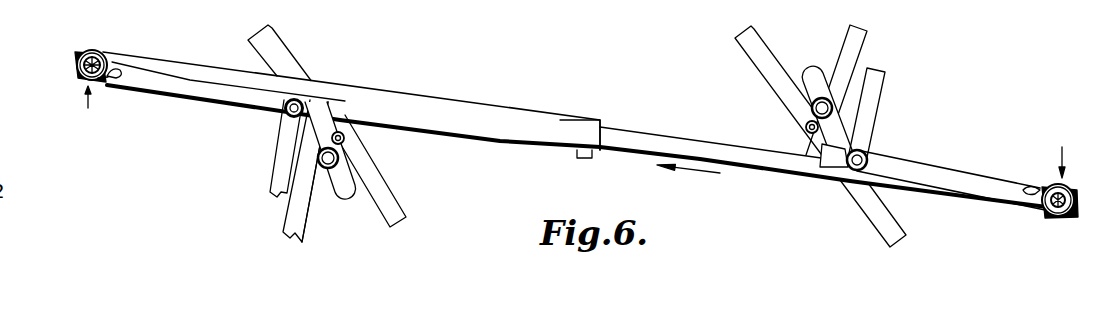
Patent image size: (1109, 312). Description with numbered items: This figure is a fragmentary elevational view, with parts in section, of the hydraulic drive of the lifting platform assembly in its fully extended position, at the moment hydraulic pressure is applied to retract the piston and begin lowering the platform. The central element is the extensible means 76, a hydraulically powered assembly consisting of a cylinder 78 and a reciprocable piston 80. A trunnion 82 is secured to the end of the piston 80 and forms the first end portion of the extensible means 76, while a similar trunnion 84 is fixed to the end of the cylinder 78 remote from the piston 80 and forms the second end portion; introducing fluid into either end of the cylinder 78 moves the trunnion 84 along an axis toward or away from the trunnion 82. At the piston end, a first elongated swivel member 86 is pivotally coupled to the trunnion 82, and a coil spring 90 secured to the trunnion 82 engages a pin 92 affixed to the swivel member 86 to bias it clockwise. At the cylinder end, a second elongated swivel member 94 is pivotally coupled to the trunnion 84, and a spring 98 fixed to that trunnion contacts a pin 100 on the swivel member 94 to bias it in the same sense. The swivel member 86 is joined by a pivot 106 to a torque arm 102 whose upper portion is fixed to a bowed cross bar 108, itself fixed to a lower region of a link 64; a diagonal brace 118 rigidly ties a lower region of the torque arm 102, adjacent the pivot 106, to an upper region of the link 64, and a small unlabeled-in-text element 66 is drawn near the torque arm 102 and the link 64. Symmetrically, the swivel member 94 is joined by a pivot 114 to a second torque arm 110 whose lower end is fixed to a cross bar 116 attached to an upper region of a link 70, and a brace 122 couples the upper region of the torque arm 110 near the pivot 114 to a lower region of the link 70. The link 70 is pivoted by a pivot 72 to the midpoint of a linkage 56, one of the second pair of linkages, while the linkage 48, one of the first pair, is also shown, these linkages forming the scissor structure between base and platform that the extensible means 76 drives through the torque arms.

The linkage 48 is at (743, 43).
The linkage 56 is at (388, 197).
The link 64 is at (847, 40).
The pin 66 is at (808, 129).
The link 70 is at (289, 239).
The pivot 72 is at (352, 138).
The extensible means 76 is at (400, 74).
The cylinder 78 is at (545, 140).
The piston 80 is at (698, 145).
The trunnion 82 is at (1056, 217).
The trunnion 84 is at (75, 60).
The first elongated swivel member 86 is at (950, 173).
The coil spring 90 is at (1077, 188).
The pin 92 is at (1037, 184).
The second elongated swivel member 94 is at (195, 82).
The spring 98 is at (95, 50).
The pin 100 is at (115, 90).
The torque arm 102 is at (837, 124).
The pivot 106 is at (865, 148).
The cross bar 108 is at (803, 76).
The second torque arm 110 is at (312, 142).
The pivot 114 is at (287, 104).
The cross bar 116 is at (343, 193).
The brace 118 is at (877, 91).
The brace 122 is at (273, 178).